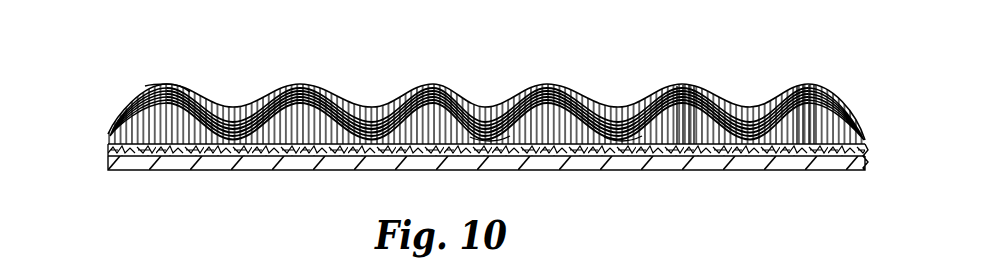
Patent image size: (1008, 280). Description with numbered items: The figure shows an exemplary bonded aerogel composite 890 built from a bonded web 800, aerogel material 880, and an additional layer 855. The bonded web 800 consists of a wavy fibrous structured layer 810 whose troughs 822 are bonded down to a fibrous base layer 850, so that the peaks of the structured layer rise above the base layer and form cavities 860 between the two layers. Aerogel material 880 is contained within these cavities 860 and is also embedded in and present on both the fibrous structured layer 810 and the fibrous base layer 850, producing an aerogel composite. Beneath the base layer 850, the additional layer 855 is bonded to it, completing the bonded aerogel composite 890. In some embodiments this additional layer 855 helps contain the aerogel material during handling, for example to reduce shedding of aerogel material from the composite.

The bonded aerogel composite 890 is at (130, 69).
The bonded web 800 is at (110, 107).
The fibrous structured layer 810 is at (170, 83).
The troughs 822 is at (613, 143).
The base layer 850 is at (110, 152).
The additional layer 855 is at (172, 171).
The cavities 860 is at (687, 128).
The aerogel material 880 is at (810, 133).